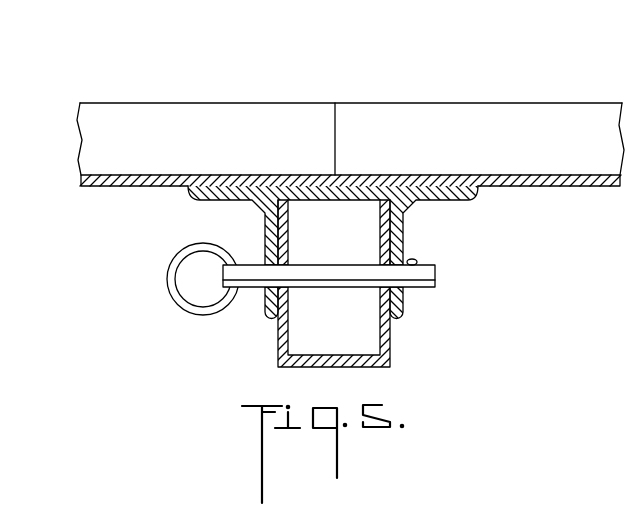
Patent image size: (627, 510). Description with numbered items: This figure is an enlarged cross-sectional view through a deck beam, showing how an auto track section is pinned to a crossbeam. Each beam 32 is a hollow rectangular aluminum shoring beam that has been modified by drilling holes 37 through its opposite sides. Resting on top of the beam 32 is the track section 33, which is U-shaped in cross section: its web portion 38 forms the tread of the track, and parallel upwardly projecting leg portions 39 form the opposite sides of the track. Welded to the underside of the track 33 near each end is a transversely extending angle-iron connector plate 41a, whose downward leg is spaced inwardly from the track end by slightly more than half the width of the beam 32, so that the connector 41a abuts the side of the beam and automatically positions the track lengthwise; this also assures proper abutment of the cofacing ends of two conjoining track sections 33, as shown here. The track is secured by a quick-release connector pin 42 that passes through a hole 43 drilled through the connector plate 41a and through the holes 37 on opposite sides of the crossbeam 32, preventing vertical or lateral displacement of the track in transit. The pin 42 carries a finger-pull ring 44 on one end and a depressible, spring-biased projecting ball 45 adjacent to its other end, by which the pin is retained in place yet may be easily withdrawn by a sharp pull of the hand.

The beam 32 is at (392, 365).
The track section 33 is at (272, 123).
The holes 37 is at (375, 265).
The web portion 38 is at (155, 180).
The leg portions 39 is at (127, 105).
The connector plate 41a is at (260, 213).
The connector pin 42 is at (338, 278).
The hole 43 is at (260, 262).
The finger-pull ring 44 is at (180, 307).
The projecting ball 45 is at (416, 262).